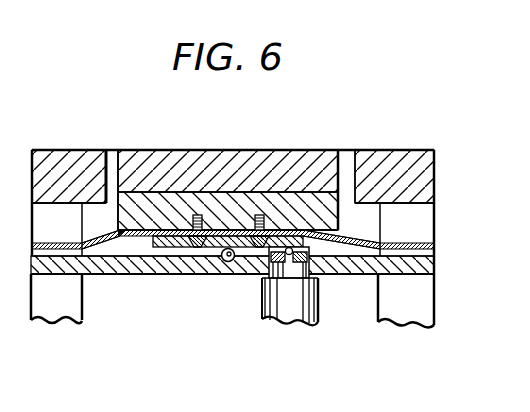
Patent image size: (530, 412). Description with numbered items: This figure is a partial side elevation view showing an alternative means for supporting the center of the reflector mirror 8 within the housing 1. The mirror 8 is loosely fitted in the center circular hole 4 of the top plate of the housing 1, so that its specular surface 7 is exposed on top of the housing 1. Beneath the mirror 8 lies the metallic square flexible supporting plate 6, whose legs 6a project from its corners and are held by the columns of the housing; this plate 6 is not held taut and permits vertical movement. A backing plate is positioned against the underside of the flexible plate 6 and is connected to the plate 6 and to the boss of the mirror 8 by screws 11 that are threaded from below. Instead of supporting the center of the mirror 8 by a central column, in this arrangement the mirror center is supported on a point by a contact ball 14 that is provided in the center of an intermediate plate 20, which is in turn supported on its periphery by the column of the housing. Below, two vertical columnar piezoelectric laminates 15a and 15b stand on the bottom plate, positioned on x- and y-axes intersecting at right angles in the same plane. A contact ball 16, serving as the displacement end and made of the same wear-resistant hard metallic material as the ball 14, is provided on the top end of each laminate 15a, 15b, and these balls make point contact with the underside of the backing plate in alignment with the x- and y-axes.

The housing 1 is at (442, 293).
The center circular hole 4 is at (348, 153).
The flexible supporting plate 6 is at (281, 231).
The legs 6a is at (102, 238).
The specular surface 7 is at (138, 146).
The reflective mirror 8 is at (315, 160).
The screws 11 is at (197, 214).
The contact ball 14 is at (228, 274).
The piezoelectric laminate 15a is at (305, 309).
The piezoelectric laminate 15b is at (289, 262).
The contact ball 16 is at (287, 294).
The intermediate plate 20 is at (113, 270).